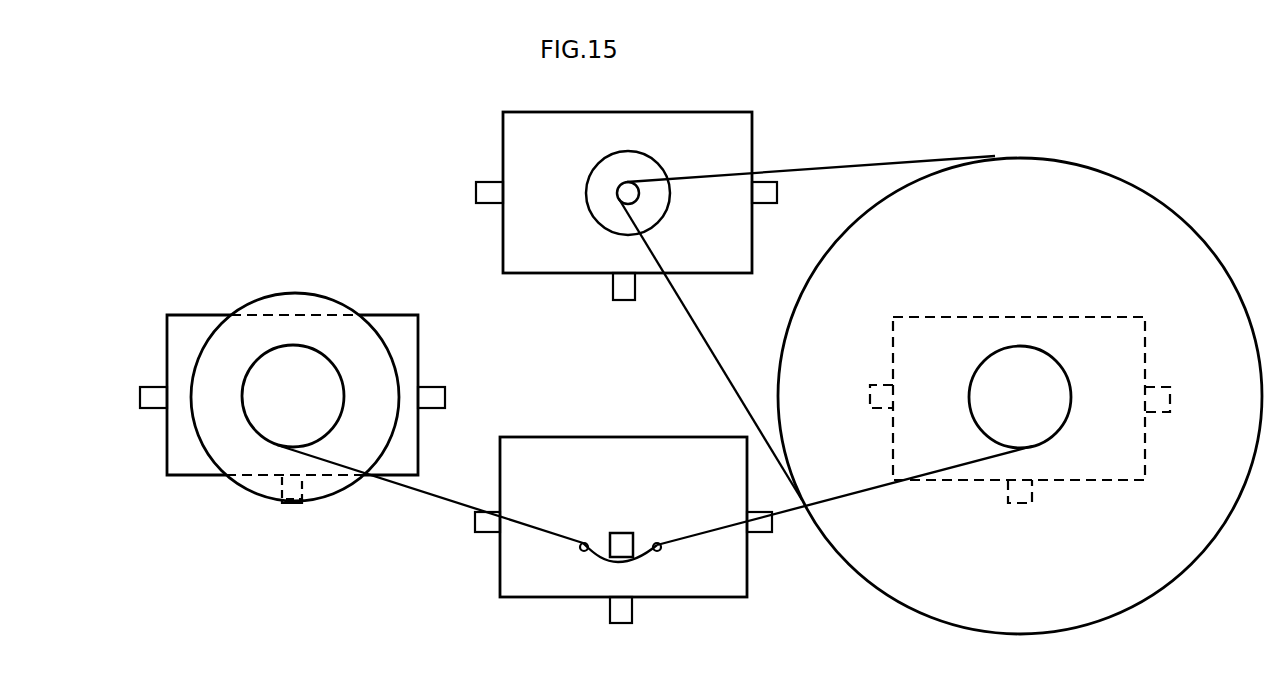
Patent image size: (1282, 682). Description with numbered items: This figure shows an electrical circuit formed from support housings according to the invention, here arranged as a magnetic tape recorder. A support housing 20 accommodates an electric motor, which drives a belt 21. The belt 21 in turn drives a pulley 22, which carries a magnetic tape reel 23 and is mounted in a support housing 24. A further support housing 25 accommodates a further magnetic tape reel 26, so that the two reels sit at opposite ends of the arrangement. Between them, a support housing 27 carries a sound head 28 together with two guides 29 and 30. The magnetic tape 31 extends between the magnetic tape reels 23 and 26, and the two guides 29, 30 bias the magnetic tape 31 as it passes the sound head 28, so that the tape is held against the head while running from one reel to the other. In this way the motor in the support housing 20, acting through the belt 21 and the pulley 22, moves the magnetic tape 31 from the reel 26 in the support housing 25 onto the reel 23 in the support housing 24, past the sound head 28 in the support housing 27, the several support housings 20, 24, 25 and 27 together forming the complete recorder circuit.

The support housing 20 is at (510, 111).
The belt 21 is at (822, 168).
The pulley 22 is at (1106, 172).
The magnetic tape reel 23 is at (1030, 358).
The support housing 24 is at (1104, 465).
The support housing 25 is at (412, 286).
The magnetic tape reel 26 is at (329, 383).
The support housing 27 is at (530, 585).
The sound head 28 is at (624, 540).
The guide 29 is at (584, 552).
The guide 30 is at (657, 552).
The magnetic tape 31 is at (432, 495).